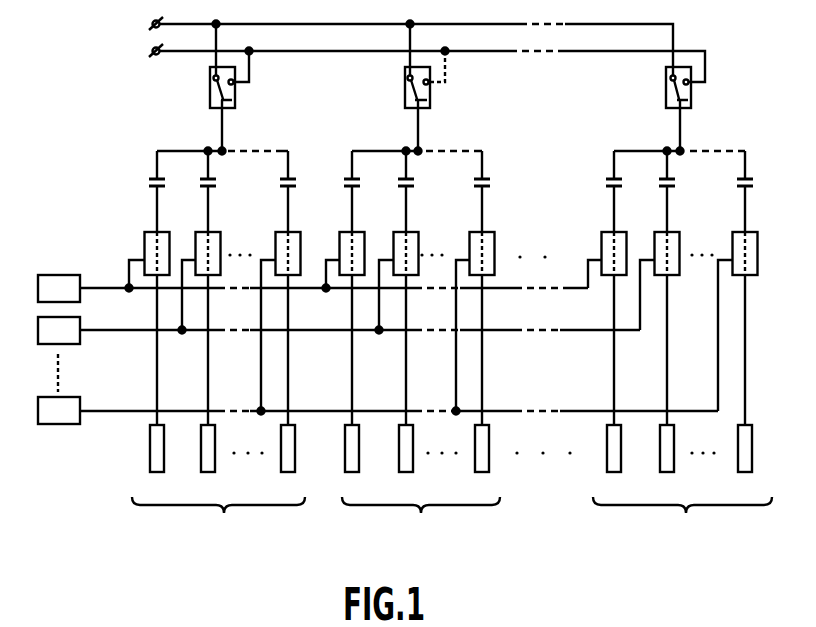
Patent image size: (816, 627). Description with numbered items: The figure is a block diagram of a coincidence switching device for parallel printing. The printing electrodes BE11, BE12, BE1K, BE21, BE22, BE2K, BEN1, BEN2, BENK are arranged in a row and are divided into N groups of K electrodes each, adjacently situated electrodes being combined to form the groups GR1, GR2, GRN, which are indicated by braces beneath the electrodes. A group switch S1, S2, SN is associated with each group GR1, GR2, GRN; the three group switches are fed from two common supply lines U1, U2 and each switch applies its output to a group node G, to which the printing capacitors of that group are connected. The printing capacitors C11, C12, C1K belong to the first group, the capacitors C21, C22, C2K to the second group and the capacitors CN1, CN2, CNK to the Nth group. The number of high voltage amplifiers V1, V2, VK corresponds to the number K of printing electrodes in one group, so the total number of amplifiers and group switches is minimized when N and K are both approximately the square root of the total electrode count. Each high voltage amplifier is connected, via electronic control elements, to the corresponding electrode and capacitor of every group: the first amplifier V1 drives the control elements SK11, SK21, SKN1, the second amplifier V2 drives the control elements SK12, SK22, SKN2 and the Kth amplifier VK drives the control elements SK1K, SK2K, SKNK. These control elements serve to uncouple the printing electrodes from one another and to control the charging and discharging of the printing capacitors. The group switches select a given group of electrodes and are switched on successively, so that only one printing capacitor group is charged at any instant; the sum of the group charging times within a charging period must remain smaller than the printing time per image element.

The first supply voltage terminal U1 is at (401, 43).
The second supply voltage terminal U2 is at (417, 60).
The group switch S1 is at (235, 98).
The group switch S2 is at (430, 98).
The group switch SN is at (691, 98).
The group node G is at (242, 133).
The printing capacitor C11 is at (149, 178).
The printing capacitor C12 is at (201, 188).
The printing capacitor C1K is at (280, 178).
The printing capacitor C21 is at (346, 188).
The printing capacitor C22 is at (399, 188).
The printing capacitor C2K is at (474, 178).
The printing capacitor CN1 is at (606, 178).
The printing capacitor CN2 is at (659, 178).
The printing capacitor CNK is at (737, 178).
The electronic control element SK11 is at (144, 243).
The electronic control element SK12 is at (195, 245).
The electronic control element SK1K is at (275, 245).
The electronic control element SK21 is at (339, 245).
The electronic control element SK22 is at (393, 245).
The electronic control element SK2K is at (469, 245).
The electronic control element SKN1 is at (601, 245).
The electronic control element SKN2 is at (654, 245).
The electronic control element SKNK is at (732, 245).
The high voltage amplifier V1 is at (313, 290).
The high voltage amplifier V2 is at (339, 332).
The high voltage amplifier VK is at (378, 412).
The printing electrode BE11 is at (150, 461).
The printing electrode BE12 is at (201, 461).
The printing electrode BE1K is at (281, 461).
The printing electrode BE21 is at (345, 461).
The printing electrode BE22 is at (399, 461).
The printing electrode BE2K is at (475, 461).
The printing electrode BEN1 is at (607, 461).
The printing electrode BEN2 is at (660, 461).
The printing electrode BENK is at (738, 461).
The group of printing electrodes GR1 is at (218, 529).
The group of printing electrodes GR2 is at (421, 529).
The group of printing electrodes GRN is at (682, 529).